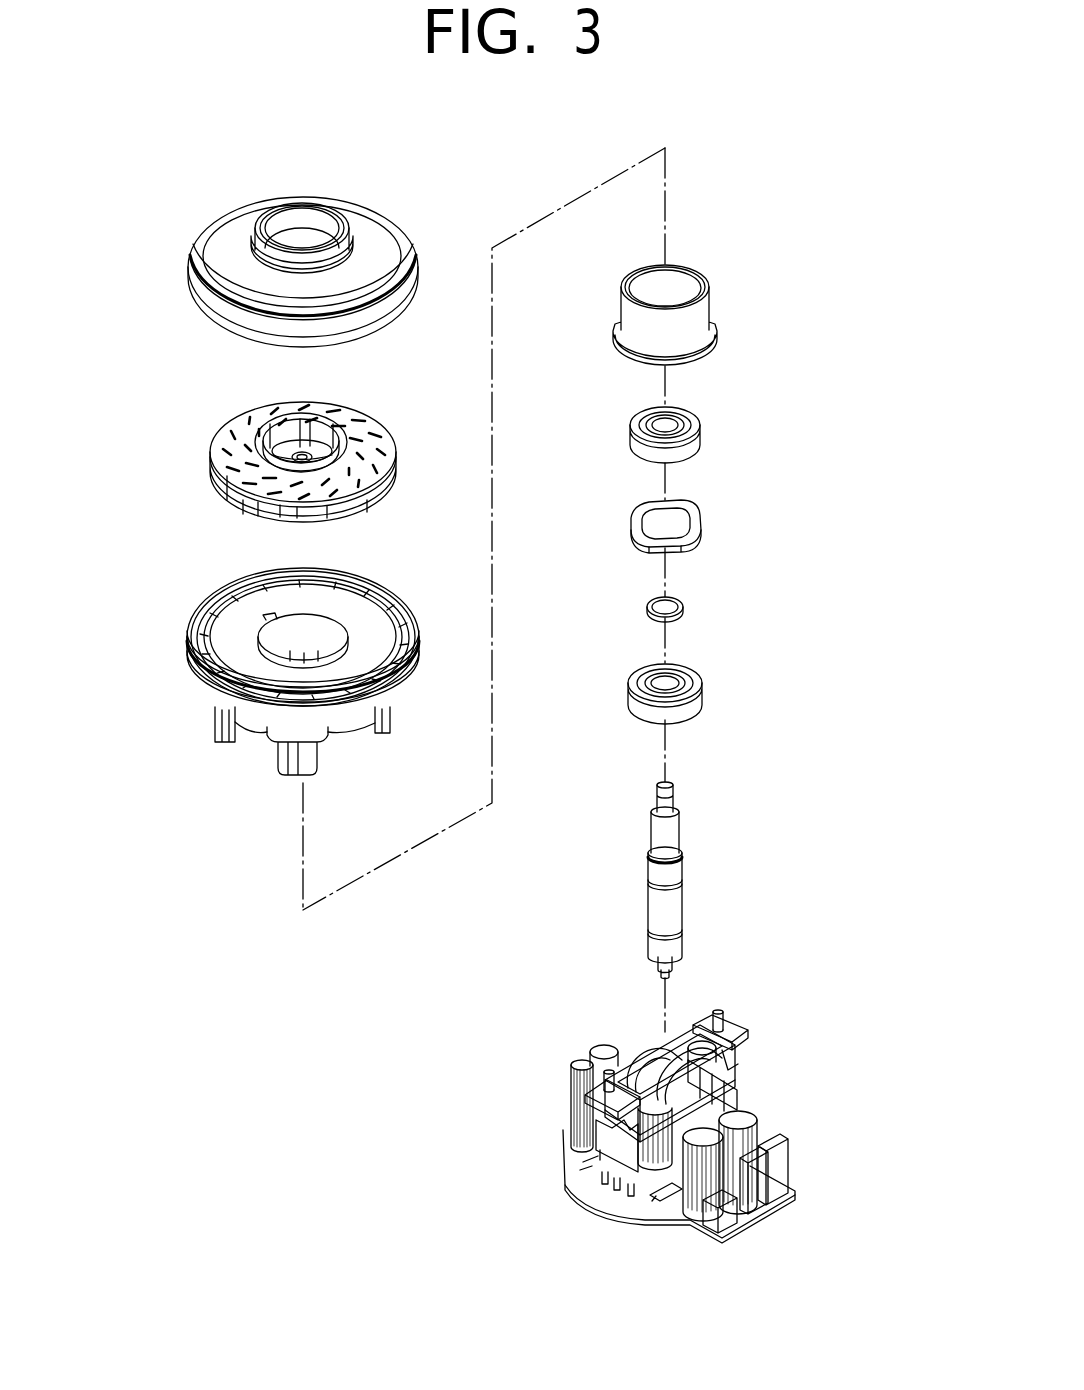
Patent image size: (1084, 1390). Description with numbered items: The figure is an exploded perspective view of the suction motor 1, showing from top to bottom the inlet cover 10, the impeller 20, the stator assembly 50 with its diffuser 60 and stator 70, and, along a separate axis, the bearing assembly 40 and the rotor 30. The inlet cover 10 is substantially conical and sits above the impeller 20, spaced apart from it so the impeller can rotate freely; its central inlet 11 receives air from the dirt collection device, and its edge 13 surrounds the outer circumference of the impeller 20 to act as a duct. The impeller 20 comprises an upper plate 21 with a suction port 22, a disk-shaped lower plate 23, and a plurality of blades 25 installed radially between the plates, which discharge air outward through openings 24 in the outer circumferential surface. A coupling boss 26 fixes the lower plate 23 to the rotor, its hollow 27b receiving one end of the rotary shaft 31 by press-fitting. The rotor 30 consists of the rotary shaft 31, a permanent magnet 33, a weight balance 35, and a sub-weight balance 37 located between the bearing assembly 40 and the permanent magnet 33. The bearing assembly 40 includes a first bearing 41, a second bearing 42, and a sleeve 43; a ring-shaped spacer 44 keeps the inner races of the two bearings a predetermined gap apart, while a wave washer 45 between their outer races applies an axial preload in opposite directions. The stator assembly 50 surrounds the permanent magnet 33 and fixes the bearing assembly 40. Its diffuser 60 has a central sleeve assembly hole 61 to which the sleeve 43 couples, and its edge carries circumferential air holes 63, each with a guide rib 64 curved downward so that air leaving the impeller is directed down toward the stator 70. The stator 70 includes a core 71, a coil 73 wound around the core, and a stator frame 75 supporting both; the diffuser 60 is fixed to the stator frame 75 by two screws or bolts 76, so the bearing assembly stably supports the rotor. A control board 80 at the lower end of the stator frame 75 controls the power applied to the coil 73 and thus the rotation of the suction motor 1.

The suction motor 1 is at (553, 122).
The inlet cover 10 is at (408, 221).
The inlet 11 is at (308, 207).
The edge 13 is at (190, 290).
The impeller 20 is at (307, 455).
The upper plate 21 is at (355, 420).
The suction port 22 is at (287, 430).
The lower plate 23 is at (378, 495).
The openings 24 is at (318, 513).
The blades 25 is at (272, 520).
The coupling boss 26 is at (312, 415).
The hollow 27b is at (270, 455).
The rotor 30 is at (726, 871).
The rotary shaft 31 is at (670, 828).
The permanent magnet 33 is at (673, 905).
The weight balance 35 is at (673, 942).
The sub-weight balance 37 is at (673, 868).
The bearing assembly 40 is at (729, 494).
The first bearing 41 is at (698, 437).
The second bearing 42 is at (705, 694).
The sleeve 43 is at (700, 316).
The spacer 44 is at (683, 610).
The wave washer 45 is at (700, 522).
The stator assembly 50 is at (509, 911).
The diffuser 60 is at (345, 669).
The sleeve assembly hole 61 is at (330, 630).
The air holes 63 is at (220, 598).
The guide ribs 64 is at (192, 628).
The stator 70 is at (692, 1121).
The core 71 is at (652, 1042).
The coil 73 is at (708, 1058).
The stator frame 75 is at (598, 1127).
The screws or bolts 76 is at (728, 1015).
The control board 80 is at (573, 1207).